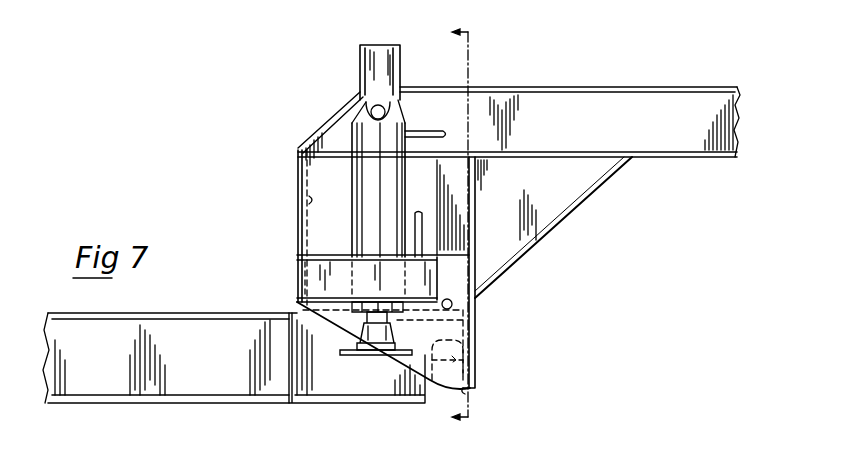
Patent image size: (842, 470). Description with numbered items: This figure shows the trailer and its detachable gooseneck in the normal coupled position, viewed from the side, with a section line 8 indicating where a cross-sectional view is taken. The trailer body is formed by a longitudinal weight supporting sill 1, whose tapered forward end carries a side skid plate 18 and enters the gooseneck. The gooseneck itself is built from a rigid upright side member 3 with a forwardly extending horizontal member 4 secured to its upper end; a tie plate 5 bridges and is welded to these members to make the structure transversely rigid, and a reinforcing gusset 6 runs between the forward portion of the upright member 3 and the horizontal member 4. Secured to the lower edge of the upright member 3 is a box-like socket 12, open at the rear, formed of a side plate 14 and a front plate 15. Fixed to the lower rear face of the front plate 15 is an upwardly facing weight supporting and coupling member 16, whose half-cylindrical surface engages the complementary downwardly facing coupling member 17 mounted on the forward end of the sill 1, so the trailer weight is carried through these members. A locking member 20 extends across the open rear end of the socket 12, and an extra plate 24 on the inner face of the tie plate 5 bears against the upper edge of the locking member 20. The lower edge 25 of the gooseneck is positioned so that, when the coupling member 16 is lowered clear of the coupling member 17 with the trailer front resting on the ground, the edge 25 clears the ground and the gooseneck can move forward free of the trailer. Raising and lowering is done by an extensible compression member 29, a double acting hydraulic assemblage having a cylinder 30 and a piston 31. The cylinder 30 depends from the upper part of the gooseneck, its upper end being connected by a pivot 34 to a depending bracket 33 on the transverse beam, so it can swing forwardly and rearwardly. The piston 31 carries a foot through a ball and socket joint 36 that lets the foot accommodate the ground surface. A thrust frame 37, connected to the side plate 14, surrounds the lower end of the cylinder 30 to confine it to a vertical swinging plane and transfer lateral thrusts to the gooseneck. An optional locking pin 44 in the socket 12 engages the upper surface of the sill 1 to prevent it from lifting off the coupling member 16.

The longitudinal weight supporting girder or sill 1 is at (132, 312).
The rigid upright side member 3 is at (317, 238).
The forwardly extending horizontal member 4 is at (575, 102).
The tie plate 5 is at (297, 231).
The reinforcing gusset 6 is at (555, 233).
The section line 8- 8 is at (449, 227).
The socket 12 is at (478, 323).
The side plate 14 is at (417, 362).
The front plate 15 is at (477, 352).
The upwardly facing weight supporting and coupling member 16 is at (475, 367).
The downwardly facing weight supporting and coupling member 17 is at (477, 338).
The side skid plate 18 is at (318, 358).
The locking member or plate 20 is at (302, 273).
The extra plate 24 is at (300, 195).
The lower edge of the gooseneck 25 is at (467, 391).
The extensible compression member 29 is at (349, 136).
The cylinder 30 is at (390, 193).
The piston 31 is at (390, 322).
The depending bracket 33 is at (372, 96).
The pivot 34 is at (372, 109).
The ball and socket joint 36 is at (350, 356).
The thrust frame 37 is at (330, 286).
The locking pin 44 is at (452, 303).